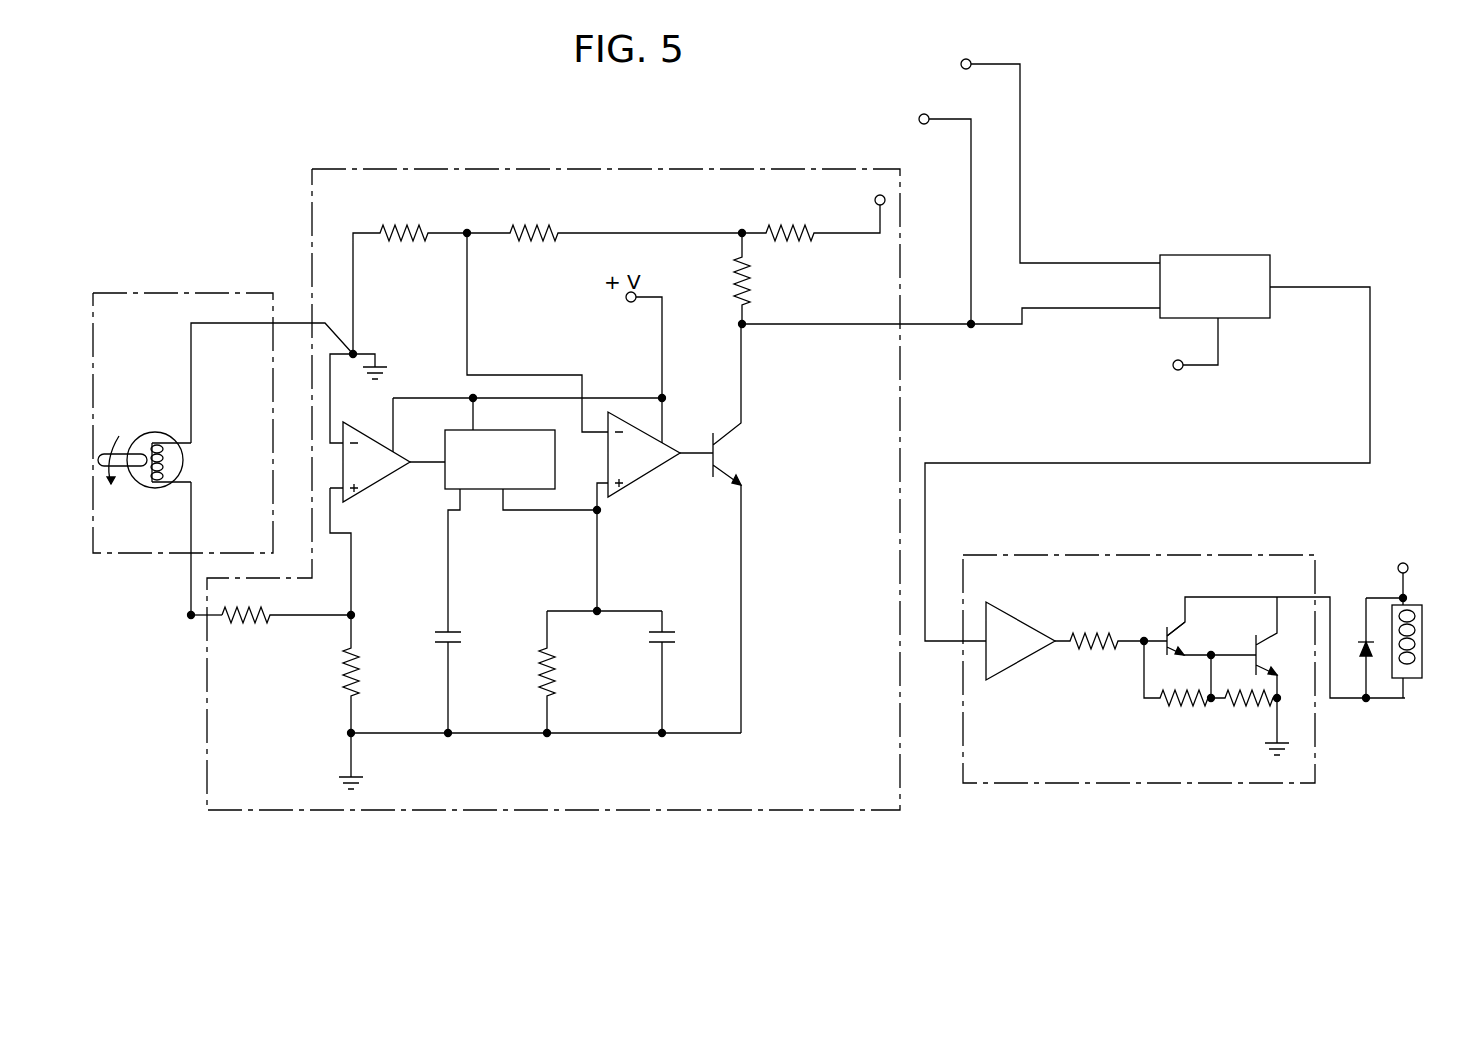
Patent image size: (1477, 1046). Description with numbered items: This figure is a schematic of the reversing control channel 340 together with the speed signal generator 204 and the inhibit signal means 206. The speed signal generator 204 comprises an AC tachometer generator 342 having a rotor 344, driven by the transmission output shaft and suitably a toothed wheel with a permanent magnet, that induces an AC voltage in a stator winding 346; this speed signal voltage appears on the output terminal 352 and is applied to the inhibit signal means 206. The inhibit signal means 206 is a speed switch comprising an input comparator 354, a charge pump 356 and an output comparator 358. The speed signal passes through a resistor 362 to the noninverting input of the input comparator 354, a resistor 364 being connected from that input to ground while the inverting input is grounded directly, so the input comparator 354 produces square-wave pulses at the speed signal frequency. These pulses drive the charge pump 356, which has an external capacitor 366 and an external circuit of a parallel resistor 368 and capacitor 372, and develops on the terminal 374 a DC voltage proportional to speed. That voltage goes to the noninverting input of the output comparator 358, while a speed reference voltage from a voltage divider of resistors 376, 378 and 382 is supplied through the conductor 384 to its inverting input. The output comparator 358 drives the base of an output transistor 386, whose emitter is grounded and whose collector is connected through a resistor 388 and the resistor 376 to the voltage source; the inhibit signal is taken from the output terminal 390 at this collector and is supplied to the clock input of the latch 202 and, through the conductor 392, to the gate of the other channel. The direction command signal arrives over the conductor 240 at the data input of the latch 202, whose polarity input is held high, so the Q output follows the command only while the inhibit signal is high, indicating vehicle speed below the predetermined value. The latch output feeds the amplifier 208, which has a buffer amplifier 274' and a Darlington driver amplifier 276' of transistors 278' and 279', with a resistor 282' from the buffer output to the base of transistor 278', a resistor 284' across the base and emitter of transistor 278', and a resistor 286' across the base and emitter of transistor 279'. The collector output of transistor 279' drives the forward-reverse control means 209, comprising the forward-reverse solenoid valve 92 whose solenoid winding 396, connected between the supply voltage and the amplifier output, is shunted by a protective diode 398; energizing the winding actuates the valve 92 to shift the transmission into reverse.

The forward-reverse solenoid valve 92 is at (1422, 615).
The latch 202 is at (1210, 255).
The speed signal generator 204 is at (160, 293).
The inhibit signal means 206 is at (590, 169).
The amplifier 208 is at (1132, 555).
The forward-reverse control means 209 is at (1373, 585).
The conductor 240 is at (961, 61).
The reversing control channel 340 is at (1157, 170).
The AC tachometer generator 342 is at (150, 432).
The rotor 344 is at (116, 480).
The stator winding 346 is at (170, 462).
The output terminal 352 is at (186, 616).
The input comparator 354 is at (372, 432).
The charge pump 356 is at (503, 430).
The output comparator 358 is at (650, 478).
The resistor 362 is at (241, 628).
The resistor 364 is at (345, 680).
The capacitor 366 is at (445, 630).
The resistor 368 is at (540, 668).
The capacitor 372 is at (670, 635).
The terminal 374 is at (593, 513).
The resistor 376 is at (784, 228).
The resistor 378 is at (540, 228).
The resistor 382 is at (402, 228).
The conductor 384 is at (525, 375).
The output transistor 386 is at (728, 459).
The resistor 388 is at (735, 290).
The output terminal 390 is at (748, 324).
The conductor 392 is at (922, 114).
The buffer amplifier 274' is at (1020, 623).
The driver amplifier 276' is at (1255, 634).
The transistor 278' is at (1207, 632).
The transistor 279' is at (1292, 676).
The resistor 282' is at (1109, 664).
The resistor 284' is at (1163, 694).
The resistor 286' is at (1237, 719).
The solenoid winding 396 is at (1412, 666).
The protective diode 398 is at (1364, 650).